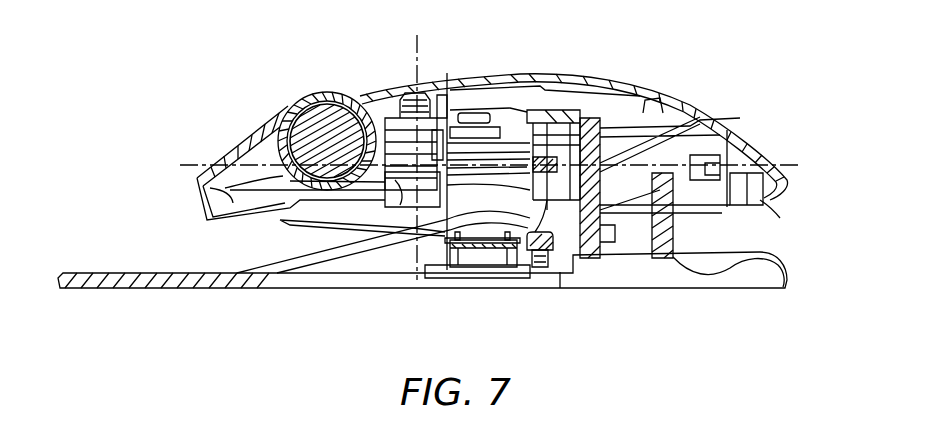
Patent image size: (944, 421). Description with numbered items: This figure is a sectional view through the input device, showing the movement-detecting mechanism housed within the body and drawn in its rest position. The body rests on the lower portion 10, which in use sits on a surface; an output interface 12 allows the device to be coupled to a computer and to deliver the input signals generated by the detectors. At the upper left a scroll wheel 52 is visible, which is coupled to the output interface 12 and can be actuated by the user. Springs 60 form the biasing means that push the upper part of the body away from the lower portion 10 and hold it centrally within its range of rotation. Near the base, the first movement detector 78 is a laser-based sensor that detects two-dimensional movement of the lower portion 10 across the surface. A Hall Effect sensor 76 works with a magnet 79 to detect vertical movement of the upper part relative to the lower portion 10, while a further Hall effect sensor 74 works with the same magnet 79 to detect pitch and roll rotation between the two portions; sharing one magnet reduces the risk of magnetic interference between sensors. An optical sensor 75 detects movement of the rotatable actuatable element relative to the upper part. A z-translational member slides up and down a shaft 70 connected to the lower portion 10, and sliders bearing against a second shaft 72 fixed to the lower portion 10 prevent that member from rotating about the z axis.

The lower portion 10 is at (777, 267).
The output interface 12 is at (133, 272).
The scroll wheel 52 is at (287, 108).
The springs 60 is at (367, 107).
The shaft 70 is at (598, 228).
The second shaft 72 is at (600, 238).
The Hall effect sensor 74 is at (560, 153).
The optical sensor 75 is at (487, 103).
The Hall Effect sensor 76 is at (537, 267).
The first movement detector 78 is at (447, 268).
The magnet 79 is at (582, 177).